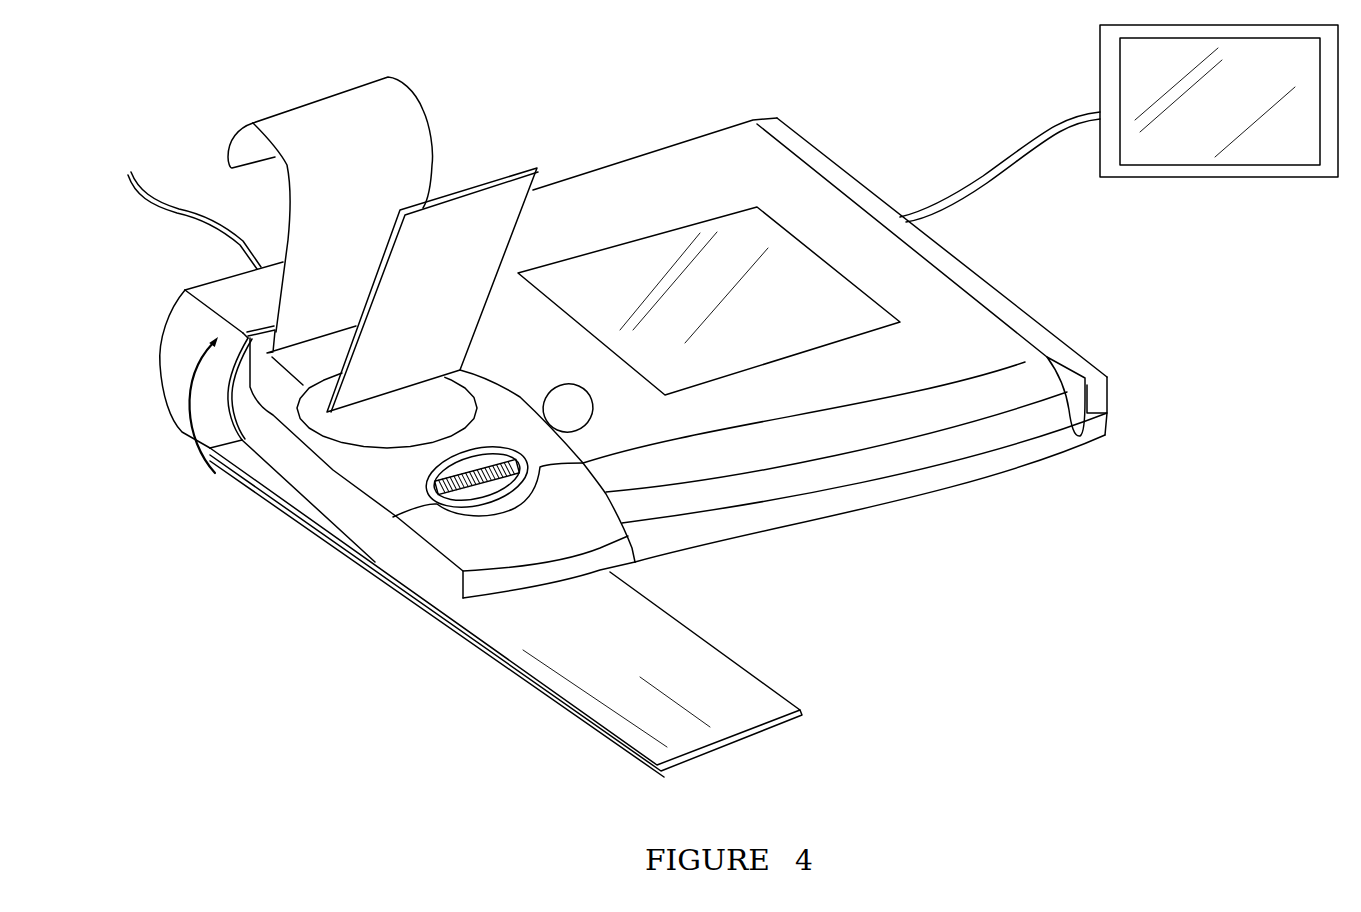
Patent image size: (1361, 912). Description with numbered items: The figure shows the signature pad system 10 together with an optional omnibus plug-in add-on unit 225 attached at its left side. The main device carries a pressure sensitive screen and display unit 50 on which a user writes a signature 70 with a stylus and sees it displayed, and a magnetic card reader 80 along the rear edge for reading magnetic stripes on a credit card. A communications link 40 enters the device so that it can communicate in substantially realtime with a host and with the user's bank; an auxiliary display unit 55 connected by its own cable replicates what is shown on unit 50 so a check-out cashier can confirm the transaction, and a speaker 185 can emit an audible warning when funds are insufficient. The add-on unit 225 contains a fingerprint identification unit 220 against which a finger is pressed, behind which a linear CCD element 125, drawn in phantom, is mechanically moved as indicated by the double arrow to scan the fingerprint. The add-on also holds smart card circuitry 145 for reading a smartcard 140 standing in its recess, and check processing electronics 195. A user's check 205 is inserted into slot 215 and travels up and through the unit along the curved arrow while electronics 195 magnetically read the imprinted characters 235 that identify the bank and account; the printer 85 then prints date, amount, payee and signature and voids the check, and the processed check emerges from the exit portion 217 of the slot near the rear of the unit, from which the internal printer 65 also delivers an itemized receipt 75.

The system 10 is at (833, 108).
The communications link 40 is at (128, 175).
The pressure sensitive screen and display unit 50 is at (625, 253).
The auxiliary display unit 55 is at (1098, 65).
The internal printer 65 is at (180, 370).
The signature 70 is at (810, 307).
The itemized receipt 75 is at (398, 98).
The magnetic card reader 80 is at (1012, 307).
The printer 85 is at (273, 448).
The CCD element 125 is at (433, 470).
The smartcard 140 is at (513, 172).
The smart card circuitry 145 is at (368, 467).
The speaker 185 is at (593, 412).
The check processing electronics 195 is at (390, 540).
The check 205 is at (743, 672).
The slot 215 is at (623, 566).
The exit portion of slot 217 is at (260, 327).
The fingerprint identification unit 220 is at (473, 457).
The omnibus add-on unit 225 is at (134, 282).
The imprinted characters 235 is at (463, 638).